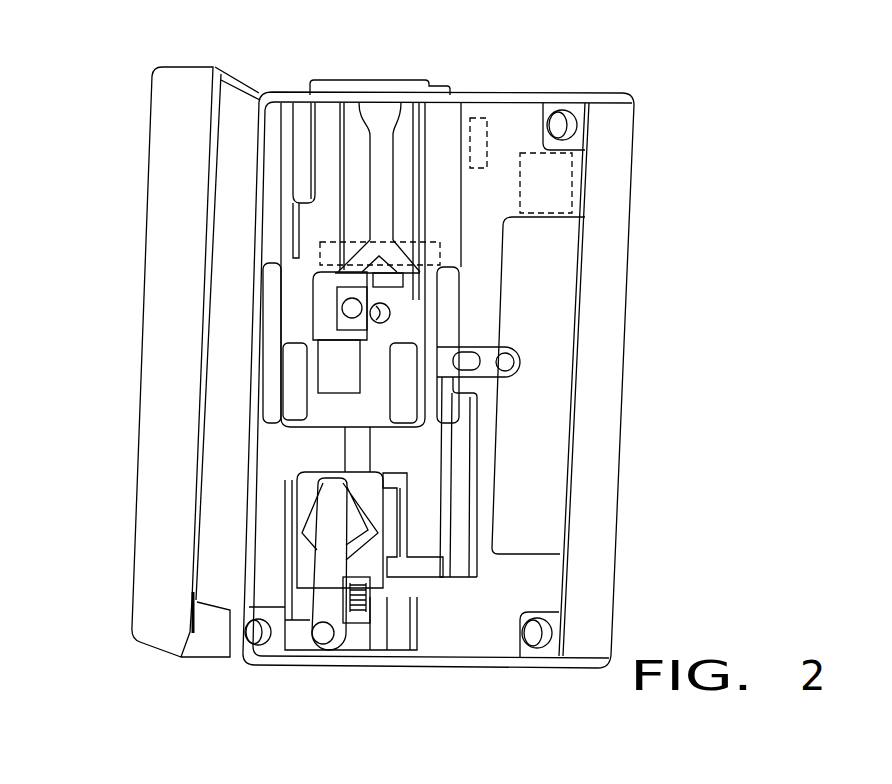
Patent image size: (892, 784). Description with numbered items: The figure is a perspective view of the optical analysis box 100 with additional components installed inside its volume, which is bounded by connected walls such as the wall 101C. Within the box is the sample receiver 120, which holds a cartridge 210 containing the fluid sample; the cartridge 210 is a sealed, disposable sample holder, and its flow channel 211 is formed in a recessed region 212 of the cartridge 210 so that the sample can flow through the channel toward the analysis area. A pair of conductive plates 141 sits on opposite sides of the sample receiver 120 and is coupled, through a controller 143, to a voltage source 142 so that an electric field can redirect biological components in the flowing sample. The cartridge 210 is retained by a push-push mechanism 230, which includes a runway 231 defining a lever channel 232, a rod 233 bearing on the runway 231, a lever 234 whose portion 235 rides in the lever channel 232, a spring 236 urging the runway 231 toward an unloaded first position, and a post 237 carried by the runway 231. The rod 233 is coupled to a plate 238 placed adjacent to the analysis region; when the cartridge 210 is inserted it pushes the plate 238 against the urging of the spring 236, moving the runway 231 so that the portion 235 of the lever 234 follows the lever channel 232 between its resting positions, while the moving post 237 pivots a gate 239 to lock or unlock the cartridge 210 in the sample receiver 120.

The optical analysis box 100 is at (657, 128).
The wall 101C is at (147, 249).
The sample receiver 120 is at (410, 441).
The conductive plates 141 is at (440, 253).
The voltage source 142 is at (487, 130).
The controller 143 is at (572, 184).
The cartridge 210 is at (432, 150).
The flow channel 211 is at (357, 167).
The recessed region 212 is at (330, 221).
The push-push mechanism 230 is at (432, 603).
The runway 231 is at (297, 484).
The lever channel 232 is at (300, 532).
The rod 233 is at (347, 447).
The lever 234 is at (325, 575).
The portion 235 is at (360, 497).
The spring 236 is at (363, 607).
The post 237 is at (463, 418).
The plate 238 is at (477, 393).
The gate 239 is at (490, 353).